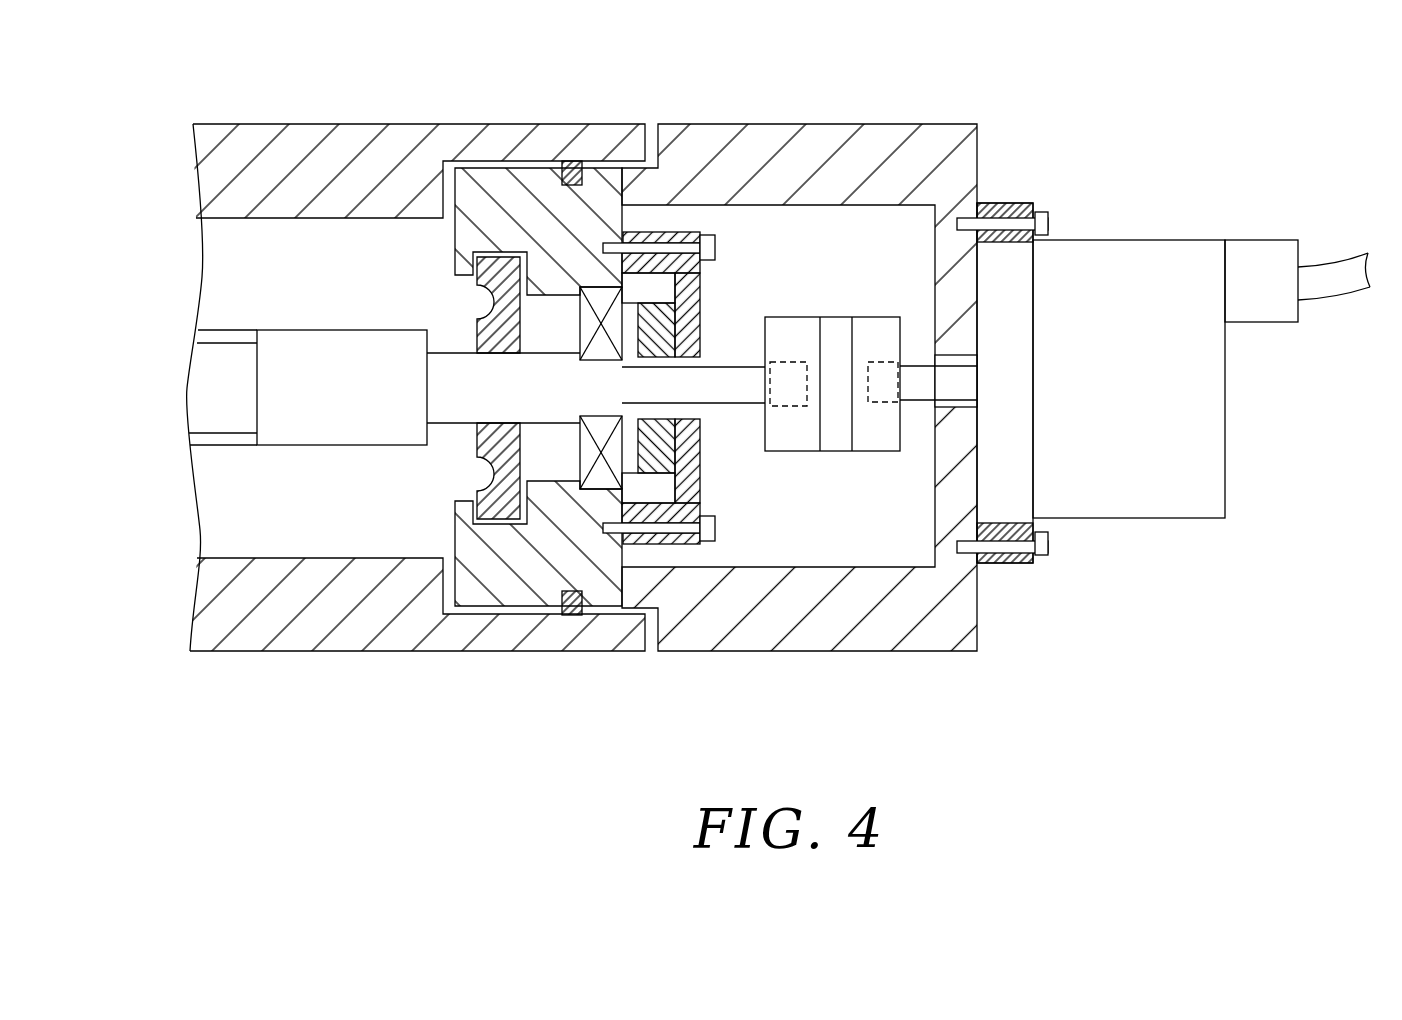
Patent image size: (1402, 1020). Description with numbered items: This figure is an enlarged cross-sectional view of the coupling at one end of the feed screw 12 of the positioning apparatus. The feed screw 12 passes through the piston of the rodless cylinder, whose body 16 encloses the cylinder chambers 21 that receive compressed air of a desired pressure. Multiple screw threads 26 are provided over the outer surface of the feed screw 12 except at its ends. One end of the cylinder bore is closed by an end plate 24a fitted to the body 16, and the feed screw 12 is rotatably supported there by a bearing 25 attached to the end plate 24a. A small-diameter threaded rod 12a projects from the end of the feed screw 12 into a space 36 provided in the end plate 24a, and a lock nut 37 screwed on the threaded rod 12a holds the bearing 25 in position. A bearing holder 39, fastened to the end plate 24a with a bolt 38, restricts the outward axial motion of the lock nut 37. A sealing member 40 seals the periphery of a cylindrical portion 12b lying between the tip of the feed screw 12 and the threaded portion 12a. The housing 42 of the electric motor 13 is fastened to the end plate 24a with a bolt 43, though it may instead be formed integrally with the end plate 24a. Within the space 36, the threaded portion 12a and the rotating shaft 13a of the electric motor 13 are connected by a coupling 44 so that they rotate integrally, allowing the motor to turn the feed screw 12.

The feed screw 12 is at (205, 390).
The threaded rod 12a is at (735, 365).
The cylindrical portion 12b is at (455, 423).
The electric motor 13 is at (1163, 351).
The rotating shaft 13a is at (918, 390).
The body 16 is at (300, 640).
The cylinder chamber 21 is at (281, 516).
The end plate 24a is at (826, 632).
The bearing 25 is at (600, 290).
The screw threads 26 is at (222, 330).
The space 36 is at (831, 531).
The lock nut 37 is at (660, 310).
The bolt 38 is at (718, 248).
The bearing holder 39 is at (705, 464).
The sealing member 40 is at (500, 265).
The housing 42 is at (1198, 507).
The bolt 43 is at (1047, 224).
The coupling 44 is at (833, 317).